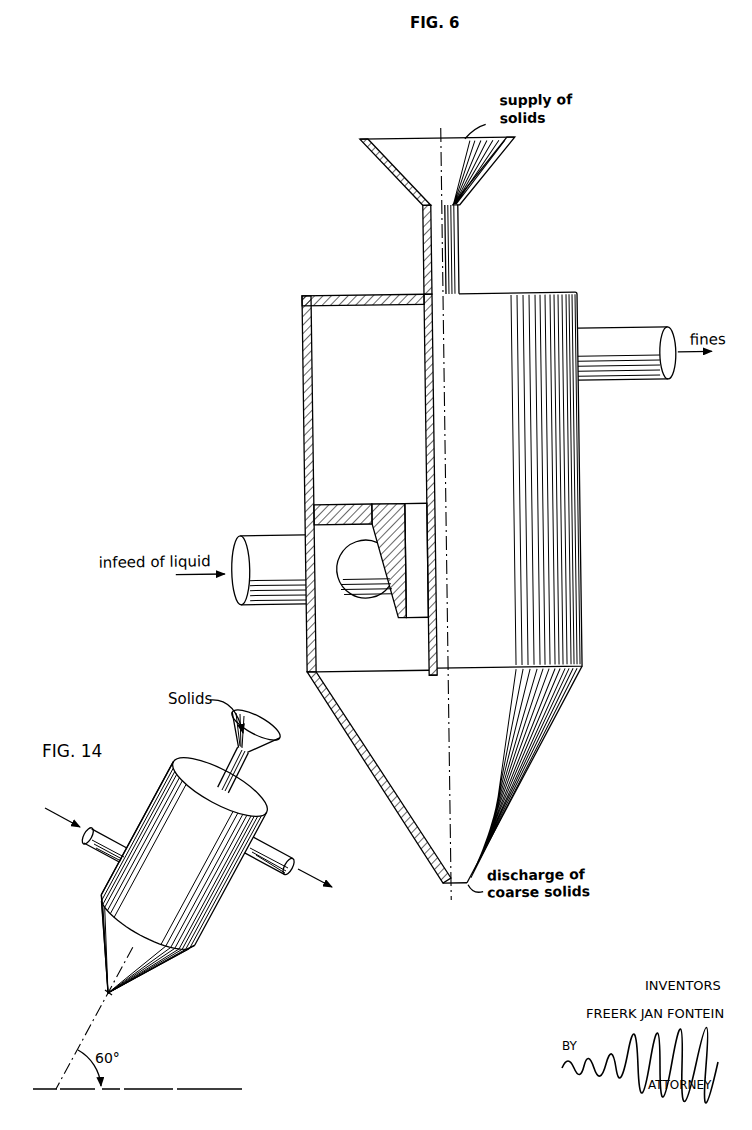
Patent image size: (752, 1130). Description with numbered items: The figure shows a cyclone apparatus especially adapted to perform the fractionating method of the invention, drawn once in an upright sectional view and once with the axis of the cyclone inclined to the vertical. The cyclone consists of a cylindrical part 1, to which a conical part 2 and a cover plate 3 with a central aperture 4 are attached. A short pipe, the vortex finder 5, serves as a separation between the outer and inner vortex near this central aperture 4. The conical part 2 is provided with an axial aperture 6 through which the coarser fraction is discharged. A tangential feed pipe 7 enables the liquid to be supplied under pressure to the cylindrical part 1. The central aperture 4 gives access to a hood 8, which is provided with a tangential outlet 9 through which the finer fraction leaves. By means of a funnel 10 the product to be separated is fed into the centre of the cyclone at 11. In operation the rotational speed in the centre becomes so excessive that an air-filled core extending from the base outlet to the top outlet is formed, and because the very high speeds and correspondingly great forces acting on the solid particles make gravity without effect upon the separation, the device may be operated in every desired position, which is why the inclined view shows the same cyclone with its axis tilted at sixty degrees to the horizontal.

In FIG. 6, the cylindrical part 1 is at (581, 536).
In FIG. 14, the cylindrical part 1 is at (217, 900).
In FIG. 6, the conical part 2 is at (521, 776).
In FIG. 14, the conical part 2 is at (150, 976).
In FIG. 6, the cover plate 3 is at (357, 566).
In FIG. 6, the central aperture 4 is at (409, 503).
In FIG. 6, the vortex finder 5 is at (394, 604).
In FIG. 6, the axial aperture 6 is at (442, 886).
In FIG. 14, the axial aperture 6 is at (104, 991).
In FIG. 6, the tangential feed pipe 7 is at (269, 534).
In FIG. 14, the tangential feed pipe 7 is at (101, 858).
In FIG. 6, the hood 8 is at (305, 403).
In FIG. 14, the hood 8 is at (160, 793).
In FIG. 6, the tangential outlet 9 is at (619, 330).
In FIG. 14, the tangential outlet 9 is at (281, 854).
In FIG. 6, the funnel 10 is at (464, 243).
In FIG. 14, the funnel 10 is at (247, 770).
In FIG. 6, the centre feed point 11 is at (434, 677).